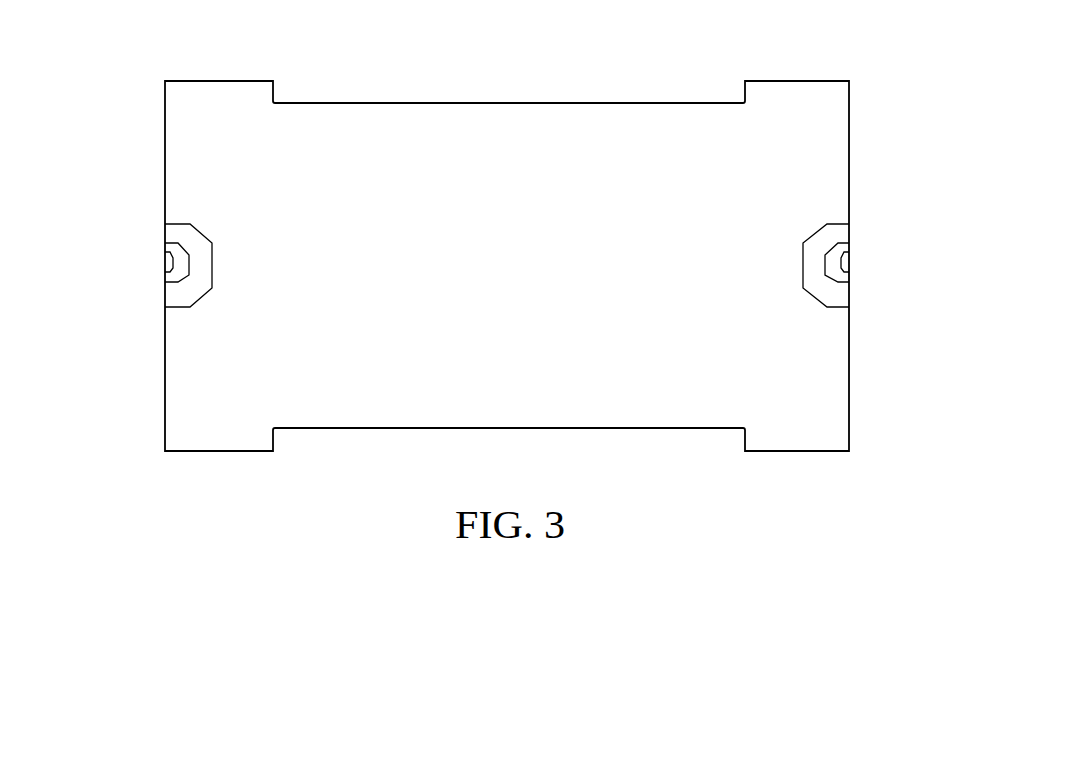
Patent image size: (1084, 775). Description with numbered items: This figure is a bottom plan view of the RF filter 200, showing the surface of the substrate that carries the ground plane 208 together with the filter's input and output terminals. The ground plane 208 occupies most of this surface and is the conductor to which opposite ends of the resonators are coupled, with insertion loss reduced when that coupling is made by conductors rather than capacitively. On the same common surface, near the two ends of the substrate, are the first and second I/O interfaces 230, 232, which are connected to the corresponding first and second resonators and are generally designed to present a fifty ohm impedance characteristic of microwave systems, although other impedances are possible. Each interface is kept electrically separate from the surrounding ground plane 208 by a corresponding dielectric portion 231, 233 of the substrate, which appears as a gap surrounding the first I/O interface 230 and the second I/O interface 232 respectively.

The battery assembly 200 is at (146, 68).
The ground plane 208 is at (443, 180).
The first I/O interface 230 is at (165, 247).
The dielectric portion 231 is at (185, 300).
The second I/O interface 232 is at (849, 248).
The dielectric portion 233 is at (822, 292).